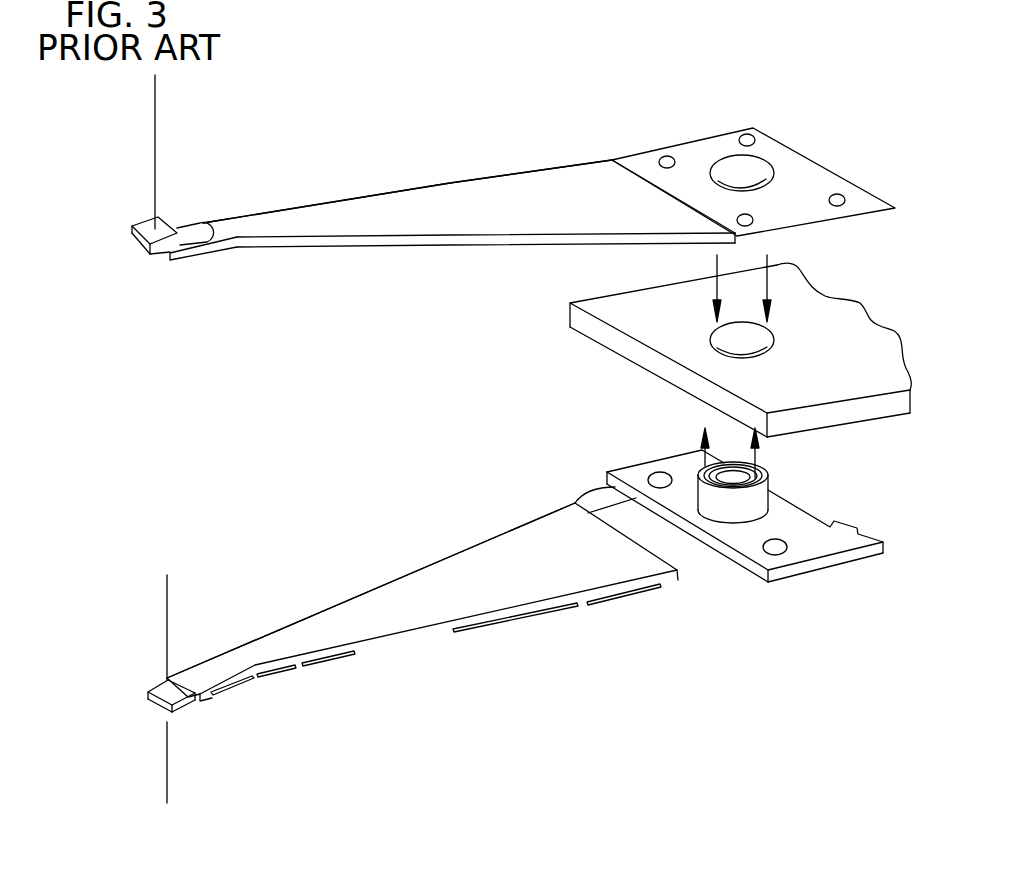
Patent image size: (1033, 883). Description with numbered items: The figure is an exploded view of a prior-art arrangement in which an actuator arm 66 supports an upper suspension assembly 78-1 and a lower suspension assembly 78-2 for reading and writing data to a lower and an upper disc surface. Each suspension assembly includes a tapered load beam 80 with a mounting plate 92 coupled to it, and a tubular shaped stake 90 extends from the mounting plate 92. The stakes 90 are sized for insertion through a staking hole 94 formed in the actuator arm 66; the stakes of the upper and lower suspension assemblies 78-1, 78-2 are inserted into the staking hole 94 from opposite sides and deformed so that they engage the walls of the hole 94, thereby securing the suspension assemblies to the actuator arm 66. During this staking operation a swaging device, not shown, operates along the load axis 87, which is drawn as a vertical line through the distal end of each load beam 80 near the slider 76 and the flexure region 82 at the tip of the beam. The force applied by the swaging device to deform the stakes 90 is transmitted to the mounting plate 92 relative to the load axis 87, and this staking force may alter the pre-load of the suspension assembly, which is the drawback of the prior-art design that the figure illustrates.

The actuator arm 66 is at (818, 370).
The slider 76 is at (152, 230).
The upper suspension assembly 78-1 is at (482, 163).
The lower suspension assembly 78-2 is at (480, 532).
The load beam 80 is at (477, 218).
The flexure 82 is at (187, 230).
The load axis 87 is at (157, 143).
The tubular shaped stake 90 is at (745, 172).
The mounting plate 92 is at (803, 180).
The staking hole 94 is at (735, 348).